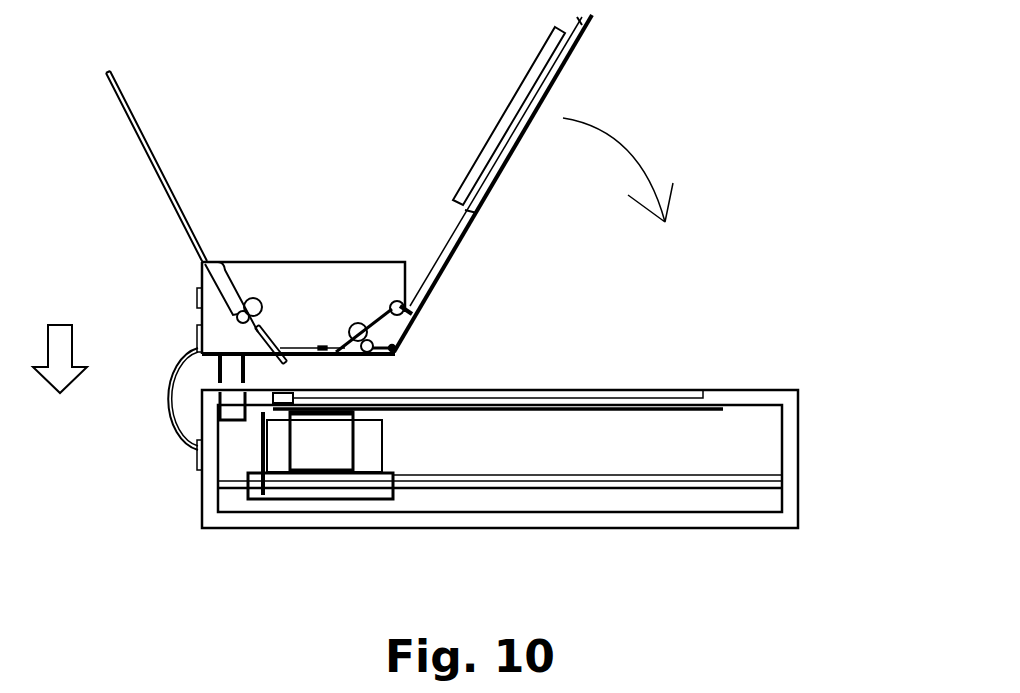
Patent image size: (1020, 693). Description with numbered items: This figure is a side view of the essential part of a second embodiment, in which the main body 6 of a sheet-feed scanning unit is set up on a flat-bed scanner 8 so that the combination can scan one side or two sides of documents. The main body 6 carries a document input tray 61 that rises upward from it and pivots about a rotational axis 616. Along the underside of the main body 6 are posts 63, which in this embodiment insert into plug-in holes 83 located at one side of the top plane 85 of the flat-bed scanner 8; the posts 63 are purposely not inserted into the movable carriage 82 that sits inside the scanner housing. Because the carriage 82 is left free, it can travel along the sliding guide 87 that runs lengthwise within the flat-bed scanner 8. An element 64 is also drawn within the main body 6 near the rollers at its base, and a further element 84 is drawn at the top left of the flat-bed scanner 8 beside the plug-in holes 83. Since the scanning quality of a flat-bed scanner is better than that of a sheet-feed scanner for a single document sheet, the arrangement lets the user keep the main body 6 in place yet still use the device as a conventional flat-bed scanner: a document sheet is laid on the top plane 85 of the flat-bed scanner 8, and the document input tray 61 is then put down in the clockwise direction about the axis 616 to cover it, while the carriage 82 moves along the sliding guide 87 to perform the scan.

The main body 6 is at (312, 258).
The document input tray 61 is at (524, 183).
The rotational axis 616 is at (398, 348).
The posts 63 is at (218, 373).
The paper guide strip 64 is at (277, 340).
The flat-bed scanner 8 is at (812, 527).
The movable carriage 82 is at (370, 447).
The plug-in holes 83 is at (218, 400).
The positioning block 84 is at (287, 397).
The top plane 85 is at (553, 391).
The sliding guide 87 is at (573, 475).